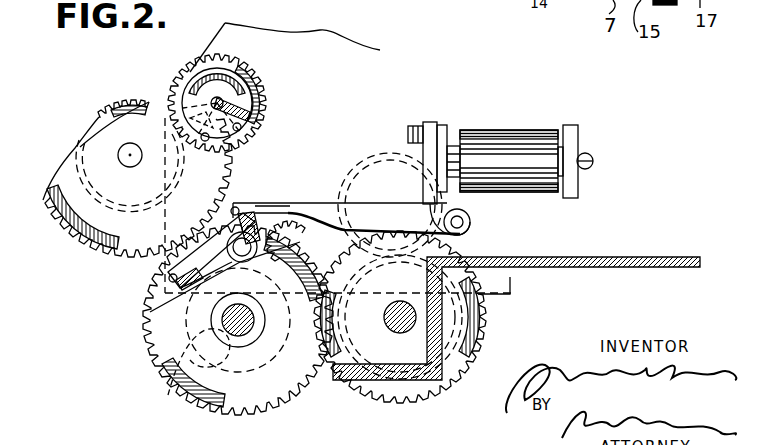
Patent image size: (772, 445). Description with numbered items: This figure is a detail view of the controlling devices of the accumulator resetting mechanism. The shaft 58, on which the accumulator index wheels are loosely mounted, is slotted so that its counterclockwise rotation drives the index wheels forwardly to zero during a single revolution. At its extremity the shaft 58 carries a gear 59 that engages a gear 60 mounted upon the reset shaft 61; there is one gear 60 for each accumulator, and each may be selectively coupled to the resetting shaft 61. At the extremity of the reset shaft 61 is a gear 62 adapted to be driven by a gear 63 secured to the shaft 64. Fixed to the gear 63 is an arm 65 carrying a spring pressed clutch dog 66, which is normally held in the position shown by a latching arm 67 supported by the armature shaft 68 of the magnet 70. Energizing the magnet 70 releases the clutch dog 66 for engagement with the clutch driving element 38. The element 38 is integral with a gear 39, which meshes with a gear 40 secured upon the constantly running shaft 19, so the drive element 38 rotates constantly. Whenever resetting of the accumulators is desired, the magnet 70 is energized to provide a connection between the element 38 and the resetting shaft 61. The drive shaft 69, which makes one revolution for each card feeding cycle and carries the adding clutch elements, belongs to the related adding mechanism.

The constantly running shaft 19 is at (416, 318).
The clutch driving element 38 is at (243, 320).
The gear 39 is at (273, 380).
The gear 40 is at (472, 353).
The shaft 58 is at (254, 99).
The gear 59 is at (262, 105).
The gear 60 is at (101, 112).
The reset shaft 61 is at (118, 152).
The gear 62 is at (73, 215).
The gear 63 is at (158, 302).
The shaft 64 is at (236, 321).
The arm 65 is at (166, 395).
The clutch dog 66 is at (203, 258).
The latching arm 67 is at (362, 205).
The armature shaft 68 is at (472, 216).
The drive shaft 69 is at (448, 128).
The magnet 70 is at (514, 140).